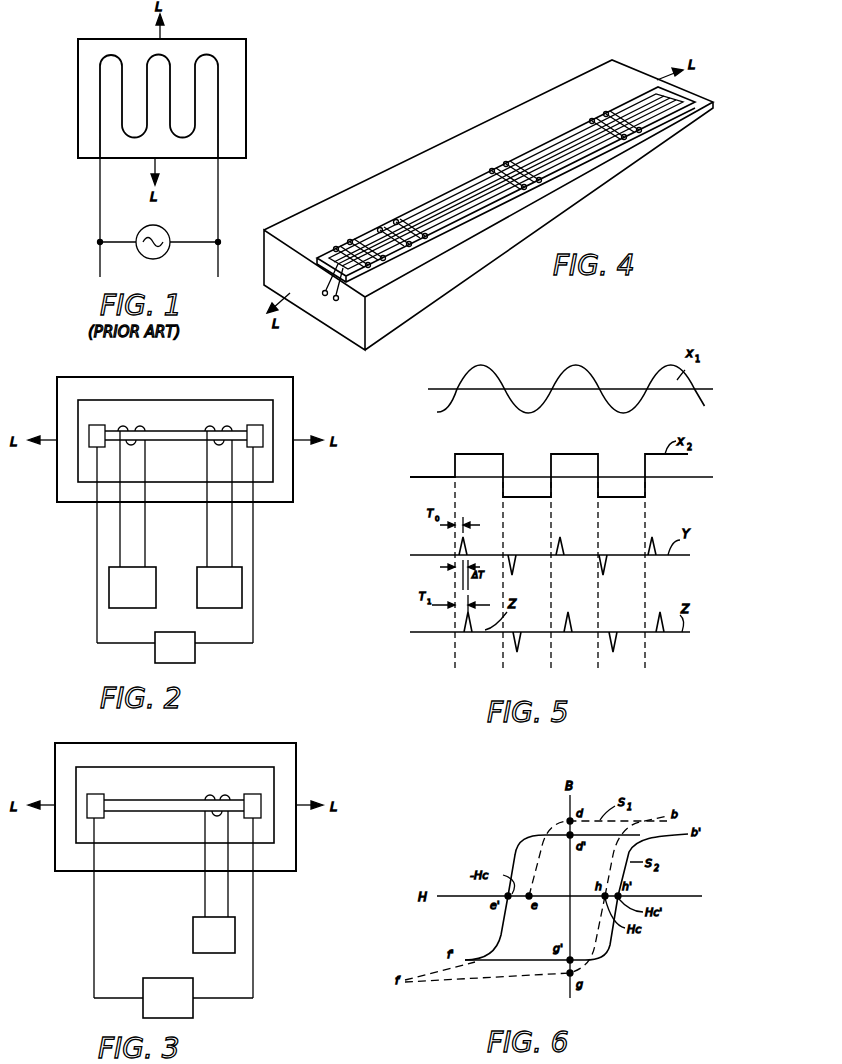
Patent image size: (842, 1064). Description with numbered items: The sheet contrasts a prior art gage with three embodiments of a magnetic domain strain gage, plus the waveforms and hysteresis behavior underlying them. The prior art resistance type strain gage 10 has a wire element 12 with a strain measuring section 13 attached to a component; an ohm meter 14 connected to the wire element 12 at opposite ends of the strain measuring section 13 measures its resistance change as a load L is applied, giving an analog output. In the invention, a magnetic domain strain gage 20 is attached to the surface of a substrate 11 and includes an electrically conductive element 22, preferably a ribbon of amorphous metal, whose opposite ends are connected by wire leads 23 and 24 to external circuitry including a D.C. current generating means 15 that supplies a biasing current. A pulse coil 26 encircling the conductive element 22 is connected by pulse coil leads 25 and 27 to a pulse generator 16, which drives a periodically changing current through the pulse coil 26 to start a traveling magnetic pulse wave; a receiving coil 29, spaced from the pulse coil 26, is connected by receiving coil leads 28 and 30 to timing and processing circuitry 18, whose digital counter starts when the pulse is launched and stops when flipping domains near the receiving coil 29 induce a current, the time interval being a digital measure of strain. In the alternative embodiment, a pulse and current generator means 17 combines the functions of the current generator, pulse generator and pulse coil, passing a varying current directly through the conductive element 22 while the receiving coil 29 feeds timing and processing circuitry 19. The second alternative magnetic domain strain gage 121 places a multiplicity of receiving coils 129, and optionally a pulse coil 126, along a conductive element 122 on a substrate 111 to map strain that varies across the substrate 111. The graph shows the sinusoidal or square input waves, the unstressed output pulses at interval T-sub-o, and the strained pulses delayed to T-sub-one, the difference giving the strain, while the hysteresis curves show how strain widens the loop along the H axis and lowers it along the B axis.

In FIG. 1, the resistance type strain gage 10 is at (246, 52).
In FIG. 1, the wire element 12 is at (218, 190).
In FIG. 1, the strain measuring section 13 is at (218, 105).
In FIG. 1, the ohm meter 14 is at (153, 259).
In FIG. 2, the substrate 11 is at (237, 377).
In FIG. 3, the substrate 11 is at (271, 750).
In FIG. 2, the D.C. current generating means 15 is at (155, 658).
In FIG. 2, the pulse generator 16 is at (145, 608).
In FIG. 3, the pulse and current generator means 17 is at (199, 1010).
In FIG. 2, the timing and processing circuitry 18 is at (212, 608).
In FIG. 3, the timing and processing circuitry 19 is at (193, 935).
In FIG. 2, the magnetic domain strain gage 20 is at (160, 400).
In FIG. 3, the magnetic domain strain gage 20 is at (170, 767).
In FIG. 2, the electrically conductive element 22 is at (160, 432).
In FIG. 3, the electrically conductive element 22 is at (125, 800).
In FIG. 4, the wire lead 23 is at (321, 290).
In FIG. 2, the wire lead 23 is at (93, 467).
In FIG. 3, the wire lead 23 is at (94, 935).
In FIG. 4, the wire lead 24 is at (334, 300).
In FIG. 2, the wire lead 24 is at (257, 466).
In FIG. 3, the wire lead 24 is at (253, 903).
In FIG. 4, the pulse coil lead 25 is at (339, 246).
In FIG. 2, the pulse coil lead 25 is at (118, 526).
In FIG. 2, the pulse coil 26 is at (118, 426).
In FIG. 4, the pulse coil lead 27 is at (353, 238).
In FIG. 2, the pulse coil lead 27 is at (145, 552).
In FIG. 4, the receiving coil lead 28 is at (398, 220).
In FIG. 2, the receiving coil lead 28 is at (205, 528).
In FIG. 3, the receiving coil lead 28 is at (205, 892).
In FIG. 2, the receiving coil 29 is at (232, 426).
In FIG. 3, the receiving coil 29 is at (222, 800).
In FIG. 4, the receiving coil lead 30 is at (383, 226).
In FIG. 2, the receiving coil lead 30 is at (232, 547).
In FIG. 3, the receiving coil lead 30 is at (228, 905).
In FIG. 4, the substrate 111 is at (612, 62).
In FIG. 4, the magnetic domain strain gage 121 is at (442, 193).
In FIG. 4, the conductive element 122 is at (340, 250).
In FIG. 4, the pulse coil 126 is at (375, 246).
In FIG. 4, the receiving coils 129 is at (542, 226).